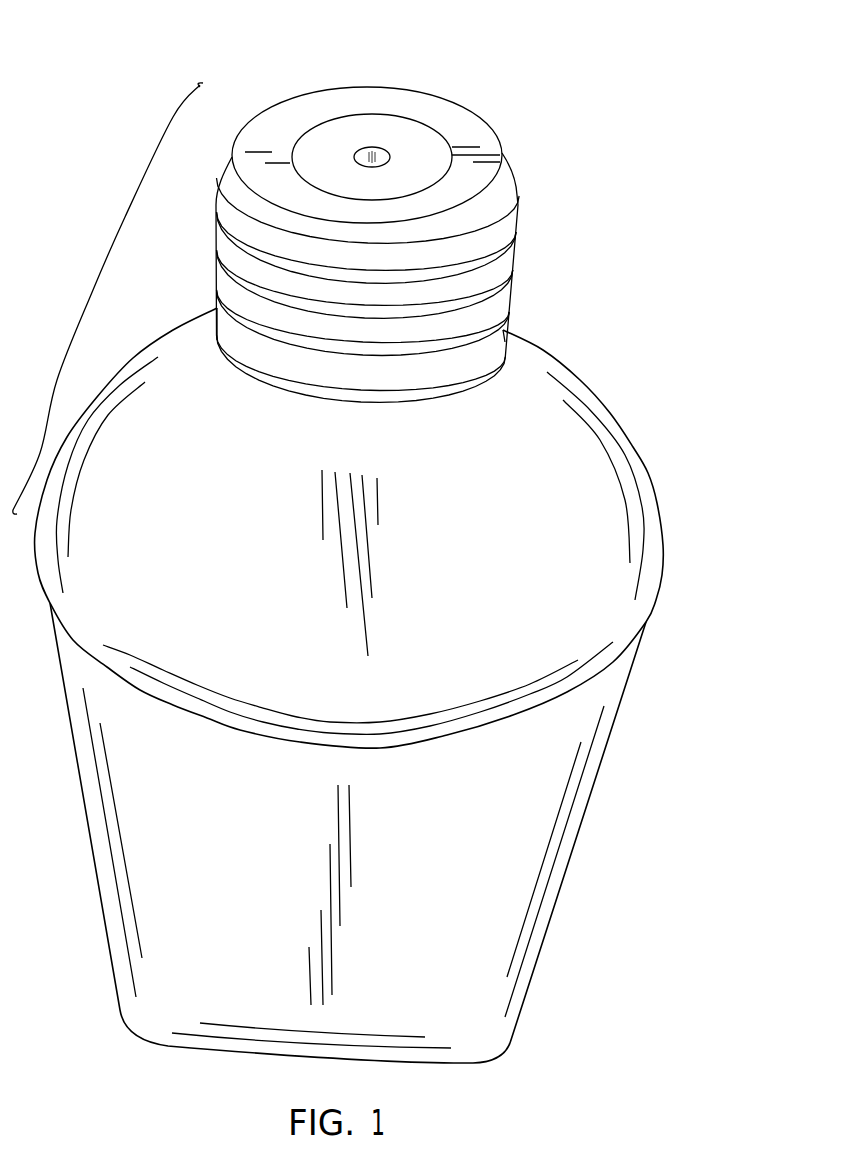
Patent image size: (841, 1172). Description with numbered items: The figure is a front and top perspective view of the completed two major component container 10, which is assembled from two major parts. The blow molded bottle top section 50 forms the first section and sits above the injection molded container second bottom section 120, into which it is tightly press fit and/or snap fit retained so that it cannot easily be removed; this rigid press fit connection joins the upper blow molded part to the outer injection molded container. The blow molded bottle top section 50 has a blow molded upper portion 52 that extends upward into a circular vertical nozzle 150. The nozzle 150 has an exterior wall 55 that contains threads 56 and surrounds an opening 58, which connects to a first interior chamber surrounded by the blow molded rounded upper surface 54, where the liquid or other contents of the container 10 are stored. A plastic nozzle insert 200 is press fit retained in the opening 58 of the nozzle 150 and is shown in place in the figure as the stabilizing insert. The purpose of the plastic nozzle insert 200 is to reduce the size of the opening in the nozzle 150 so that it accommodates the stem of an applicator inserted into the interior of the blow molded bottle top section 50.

The two major component container 10 is at (93, 60).
The blow molded bottle top section 50 is at (652, 398).
The blow molded upper portion 52 is at (95, 290).
The blow molded rounded upper surface 54 is at (610, 503).
The exterior wall 55 is at (505, 362).
The threads 56 is at (513, 263).
The opening 58 is at (332, 138).
The injection molded container second bottom section 120 is at (584, 848).
The nozzle 150 is at (569, 267).
The plastic nozzle insert 200 is at (385, 152).